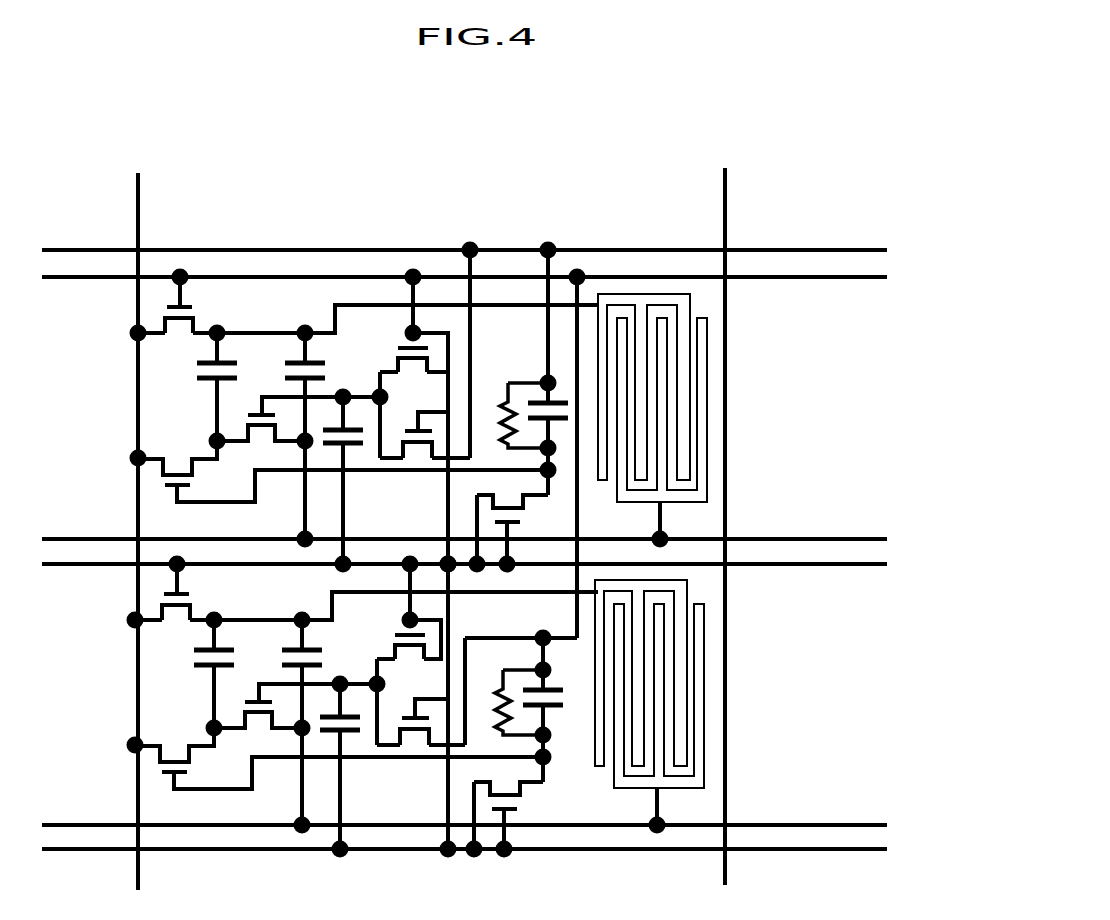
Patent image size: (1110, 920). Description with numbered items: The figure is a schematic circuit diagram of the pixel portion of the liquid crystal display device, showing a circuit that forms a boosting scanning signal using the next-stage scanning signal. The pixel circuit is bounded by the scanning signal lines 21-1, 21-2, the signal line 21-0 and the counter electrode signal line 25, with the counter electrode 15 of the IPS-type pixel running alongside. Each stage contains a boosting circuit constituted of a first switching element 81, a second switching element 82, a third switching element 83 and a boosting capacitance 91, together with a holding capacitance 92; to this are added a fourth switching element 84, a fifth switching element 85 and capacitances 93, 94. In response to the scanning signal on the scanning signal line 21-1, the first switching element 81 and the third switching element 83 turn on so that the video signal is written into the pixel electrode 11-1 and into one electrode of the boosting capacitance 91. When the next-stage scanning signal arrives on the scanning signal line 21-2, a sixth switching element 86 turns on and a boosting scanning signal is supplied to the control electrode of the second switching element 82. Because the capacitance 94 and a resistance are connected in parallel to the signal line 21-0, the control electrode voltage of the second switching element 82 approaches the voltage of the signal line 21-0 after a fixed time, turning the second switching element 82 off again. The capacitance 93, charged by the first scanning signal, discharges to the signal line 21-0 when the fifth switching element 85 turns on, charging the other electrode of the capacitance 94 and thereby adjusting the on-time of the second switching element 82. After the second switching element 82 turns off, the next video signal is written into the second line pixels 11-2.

The pixel electrode 11-1 is at (640, 303).
The second line pixels 11-2 is at (595, 765).
The counter electrode 15 is at (705, 317).
The signal line 21-0 is at (153, 250).
The scanning signal line 21-1 is at (58, 277).
The scanning signal line 21-2 is at (58, 565).
The counter electrode signal line 25 is at (60, 539).
The first switching element 81 is at (157, 313).
The second switching element 82 is at (172, 453).
The third switching element 83 is at (261, 405).
The fourth switching element 84 is at (432, 325).
The fifth switching element 85 is at (438, 430).
The transistor 86 is at (535, 522).
The boosting capacitance 91 is at (208, 360).
The holding capacitance 92 is at (315, 357).
The capacitance 93 is at (352, 420).
The capacitance 94 is at (557, 393).